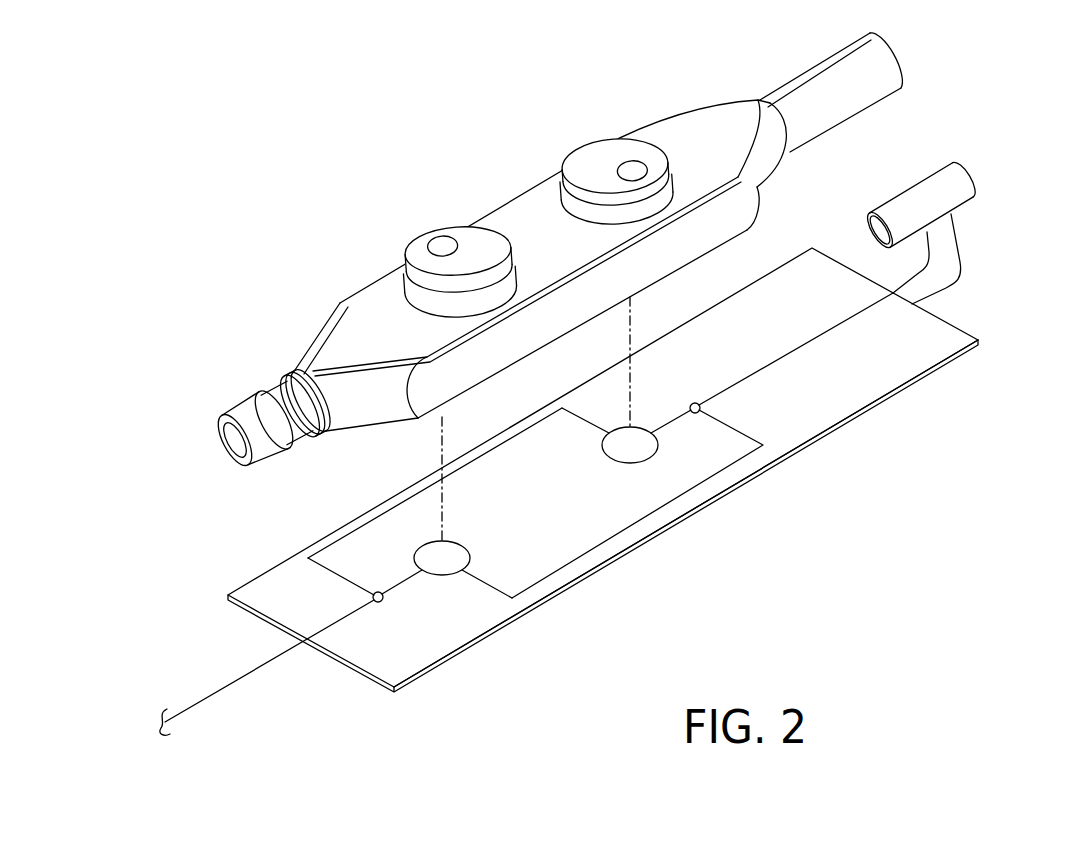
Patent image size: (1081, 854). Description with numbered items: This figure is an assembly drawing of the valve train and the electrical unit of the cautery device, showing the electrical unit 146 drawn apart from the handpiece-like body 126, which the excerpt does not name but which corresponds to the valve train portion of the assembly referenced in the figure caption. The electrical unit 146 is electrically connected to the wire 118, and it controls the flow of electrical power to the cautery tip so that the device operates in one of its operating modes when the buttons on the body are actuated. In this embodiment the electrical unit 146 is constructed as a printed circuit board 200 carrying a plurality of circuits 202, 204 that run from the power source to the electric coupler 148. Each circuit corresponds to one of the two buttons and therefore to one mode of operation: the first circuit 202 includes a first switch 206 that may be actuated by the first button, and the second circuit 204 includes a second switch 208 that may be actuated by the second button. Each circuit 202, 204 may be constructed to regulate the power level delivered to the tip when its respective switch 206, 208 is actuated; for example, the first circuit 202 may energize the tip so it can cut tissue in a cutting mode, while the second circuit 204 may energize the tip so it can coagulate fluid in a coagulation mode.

The wire 118 is at (232, 683).
The handpiece 126 is at (495, 205).
The electrical unit 146 is at (940, 382).
The electric coupler 148 is at (975, 190).
The printed circuit board 200 is at (430, 643).
The first circuit 202 is at (632, 528).
The second circuit 204 is at (353, 518).
The first switch 206 is at (452, 578).
The second switch 208 is at (657, 448).